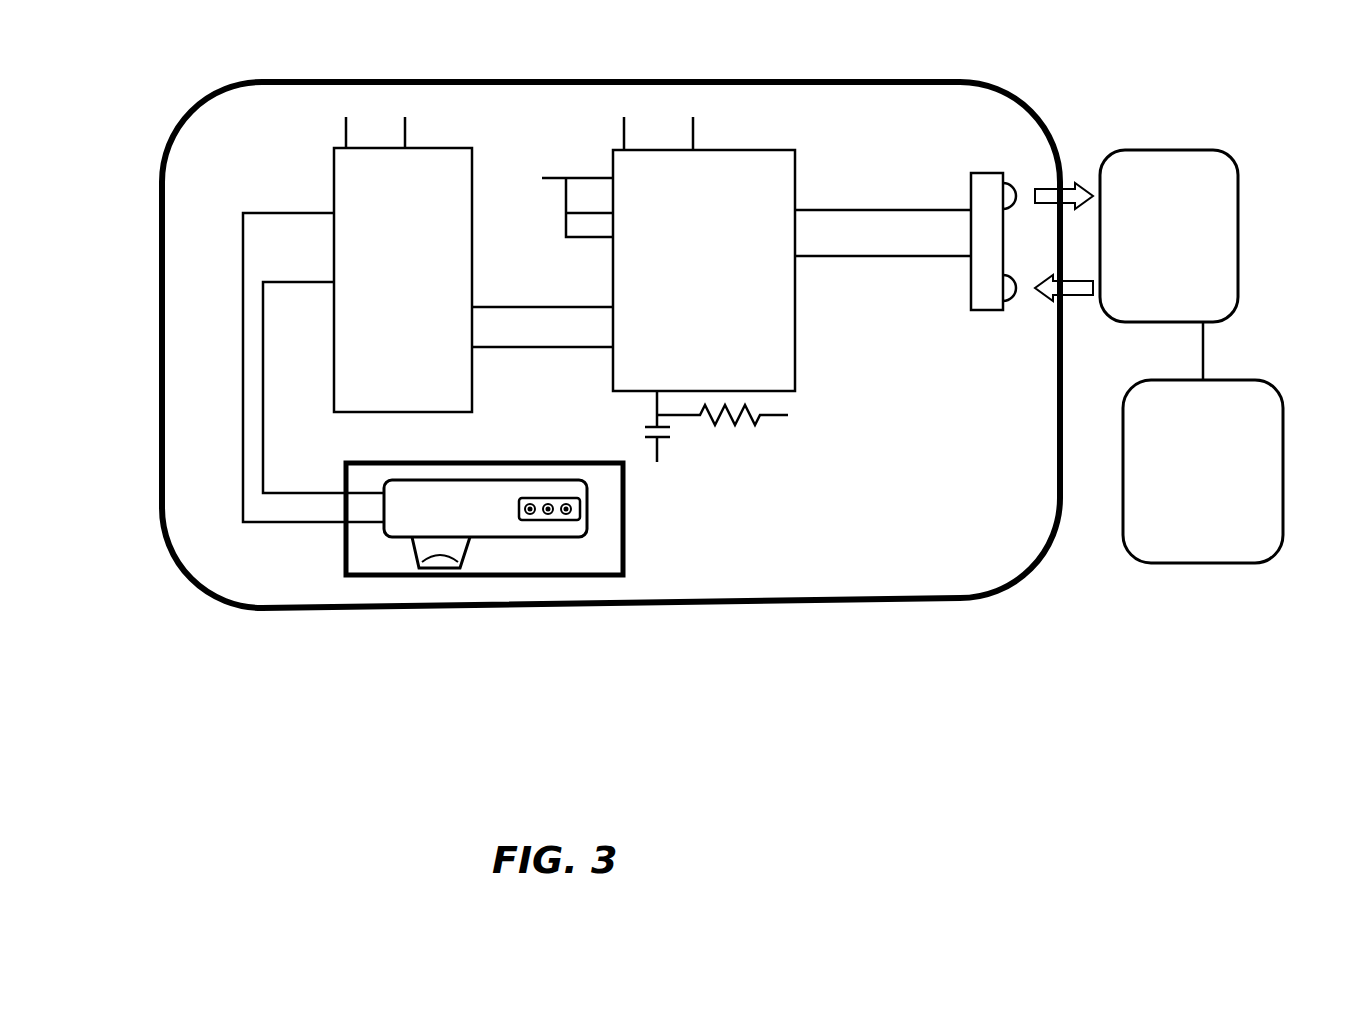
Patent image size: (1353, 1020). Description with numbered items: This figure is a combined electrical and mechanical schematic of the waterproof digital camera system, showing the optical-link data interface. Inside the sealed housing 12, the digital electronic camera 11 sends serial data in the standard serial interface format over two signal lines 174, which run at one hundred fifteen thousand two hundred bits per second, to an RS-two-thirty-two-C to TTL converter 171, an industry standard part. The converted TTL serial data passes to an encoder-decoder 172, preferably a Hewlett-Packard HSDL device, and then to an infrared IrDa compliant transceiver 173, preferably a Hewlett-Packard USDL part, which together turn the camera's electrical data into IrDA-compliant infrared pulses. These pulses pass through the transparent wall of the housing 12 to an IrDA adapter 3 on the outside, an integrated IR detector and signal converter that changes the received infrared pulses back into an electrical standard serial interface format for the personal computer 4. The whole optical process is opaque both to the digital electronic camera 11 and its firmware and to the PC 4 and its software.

The IrDA adapter 3 is at (1168, 160).
The personal computer 4 is at (1198, 553).
The digital electronic camera 11 is at (512, 525).
The housing 12 is at (1033, 582).
The RS-232C to TTL converter 171 is at (343, 195).
The encoder-decoder 172 is at (752, 195).
The infrared IrDa compliant transceiver 173 is at (981, 193).
The signal lines 174 is at (263, 362).